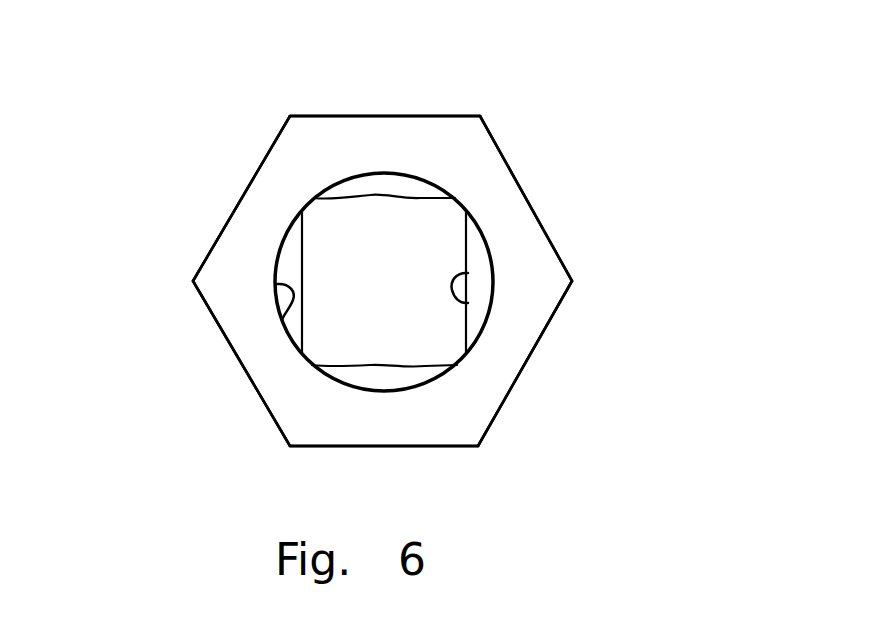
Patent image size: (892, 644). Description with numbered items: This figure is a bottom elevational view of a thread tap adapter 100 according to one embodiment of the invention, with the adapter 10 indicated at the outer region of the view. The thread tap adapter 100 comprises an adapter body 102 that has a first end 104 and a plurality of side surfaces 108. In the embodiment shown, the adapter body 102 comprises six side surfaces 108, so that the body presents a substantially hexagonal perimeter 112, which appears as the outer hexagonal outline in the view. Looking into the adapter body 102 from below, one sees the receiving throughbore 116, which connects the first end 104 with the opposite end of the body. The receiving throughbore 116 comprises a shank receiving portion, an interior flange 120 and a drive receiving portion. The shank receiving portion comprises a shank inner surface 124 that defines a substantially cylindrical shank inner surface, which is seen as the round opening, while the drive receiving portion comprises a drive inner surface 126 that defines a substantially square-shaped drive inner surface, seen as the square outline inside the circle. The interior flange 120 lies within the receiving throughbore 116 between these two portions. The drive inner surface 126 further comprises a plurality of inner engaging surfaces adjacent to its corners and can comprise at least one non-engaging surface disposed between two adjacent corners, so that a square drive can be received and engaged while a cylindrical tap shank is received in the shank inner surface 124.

The fastener 10 is at (558, 250).
The thread tap adapter 100 is at (138, 413).
The adapter body 102 is at (238, 204).
The first end 104 is at (478, 163).
The side surfaces 108 is at (390, 117).
The hexagonal perimeter 112 is at (458, 116).
The receiving throughbore 116 is at (344, 248).
The interior flange 120 is at (407, 375).
The shank inner surface 124 is at (296, 297).
The drive inner surface 126 is at (448, 307).